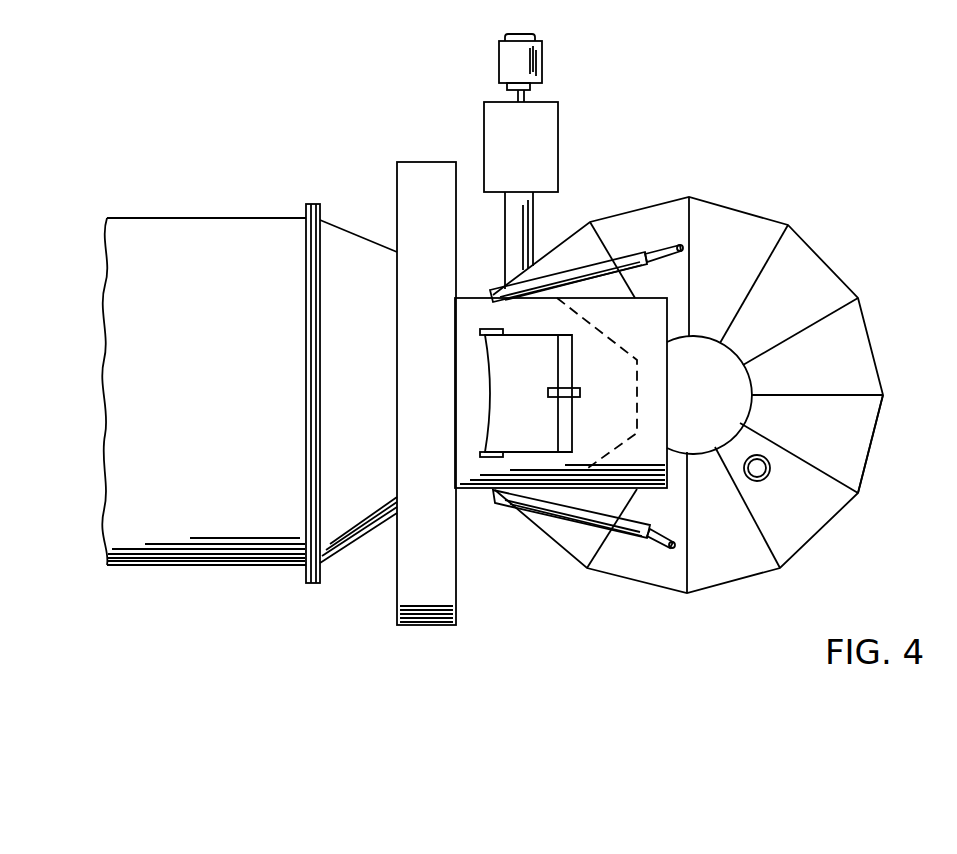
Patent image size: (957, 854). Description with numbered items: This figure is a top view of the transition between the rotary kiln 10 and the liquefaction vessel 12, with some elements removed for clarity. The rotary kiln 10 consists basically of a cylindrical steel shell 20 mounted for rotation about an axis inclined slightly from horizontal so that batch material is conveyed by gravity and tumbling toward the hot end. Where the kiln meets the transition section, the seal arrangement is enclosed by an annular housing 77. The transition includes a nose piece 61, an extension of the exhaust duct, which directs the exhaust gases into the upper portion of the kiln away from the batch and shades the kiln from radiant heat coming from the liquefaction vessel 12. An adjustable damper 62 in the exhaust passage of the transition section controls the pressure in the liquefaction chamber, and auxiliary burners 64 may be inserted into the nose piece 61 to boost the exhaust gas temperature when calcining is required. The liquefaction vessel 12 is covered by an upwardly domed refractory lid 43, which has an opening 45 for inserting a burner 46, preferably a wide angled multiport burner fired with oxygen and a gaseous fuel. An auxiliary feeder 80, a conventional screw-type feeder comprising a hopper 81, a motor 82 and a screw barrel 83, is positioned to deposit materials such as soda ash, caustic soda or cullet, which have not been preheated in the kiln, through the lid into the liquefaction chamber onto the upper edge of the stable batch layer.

The rotary kiln 10 is at (215, 205).
The cylindrical steel shell 20 is at (160, 568).
The annular housing 77 is at (397, 188).
The auxiliary feeder 80 is at (548, 113).
The hopper 81 is at (570, 130).
The motor 82 is at (498, 60).
The screw barrel 83 is at (505, 238).
The nose piece 61 is at (472, 494).
The adjustable damper 62 is at (551, 334).
The auxiliary burners 64 is at (626, 252).
The liquefaction vessel 12 is at (895, 334).
The refractory lid 43 is at (863, 440).
The opening 45 is at (758, 480).
The burner 46 is at (769, 474).